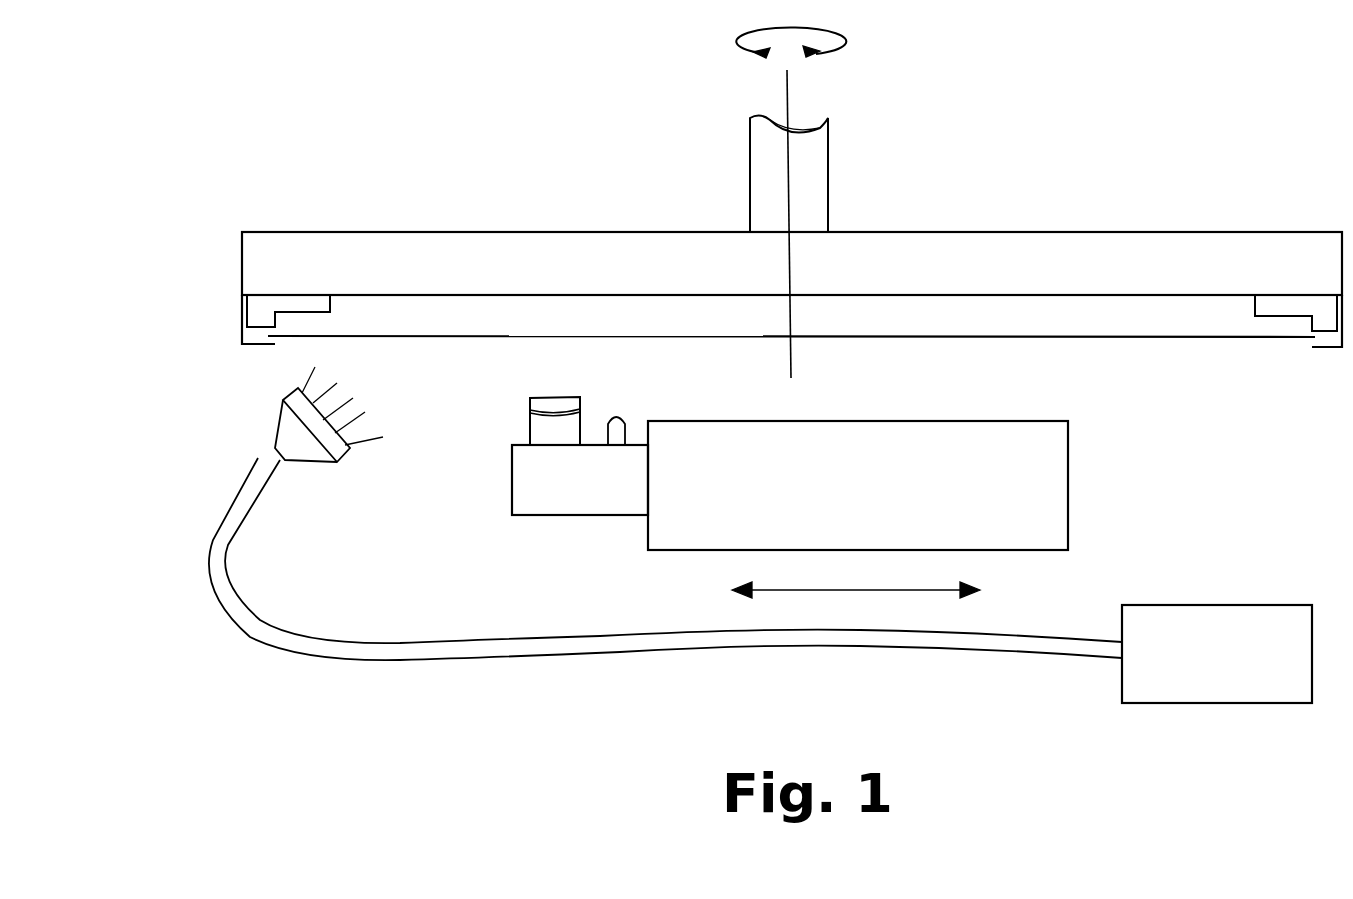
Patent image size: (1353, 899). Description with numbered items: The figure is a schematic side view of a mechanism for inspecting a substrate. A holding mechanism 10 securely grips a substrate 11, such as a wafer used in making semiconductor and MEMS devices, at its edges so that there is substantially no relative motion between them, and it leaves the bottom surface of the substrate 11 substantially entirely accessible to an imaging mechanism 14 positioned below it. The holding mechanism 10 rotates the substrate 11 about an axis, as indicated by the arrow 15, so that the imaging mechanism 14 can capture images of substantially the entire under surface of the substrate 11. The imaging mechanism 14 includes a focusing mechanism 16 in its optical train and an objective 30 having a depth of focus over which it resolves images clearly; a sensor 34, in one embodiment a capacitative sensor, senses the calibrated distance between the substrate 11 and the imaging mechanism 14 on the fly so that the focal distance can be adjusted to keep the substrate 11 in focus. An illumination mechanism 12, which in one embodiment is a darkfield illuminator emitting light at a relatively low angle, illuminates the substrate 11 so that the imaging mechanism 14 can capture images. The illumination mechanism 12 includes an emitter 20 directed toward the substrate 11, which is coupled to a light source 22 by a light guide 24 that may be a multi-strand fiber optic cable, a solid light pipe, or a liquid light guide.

The holding mechanism 10 is at (218, 271).
The substrate 11 is at (1187, 339).
The illumination mechanism 12 is at (441, 663).
The imaging mechanism 14 is at (1069, 461).
The arrow 15 is at (789, 90).
The focusing mechanism 16 is at (556, 518).
The emitter 20 is at (282, 400).
The light source 22 is at (1200, 605).
The light guide 24 is at (900, 649).
The objective 30 is at (530, 424).
The sensor 34 is at (623, 425).